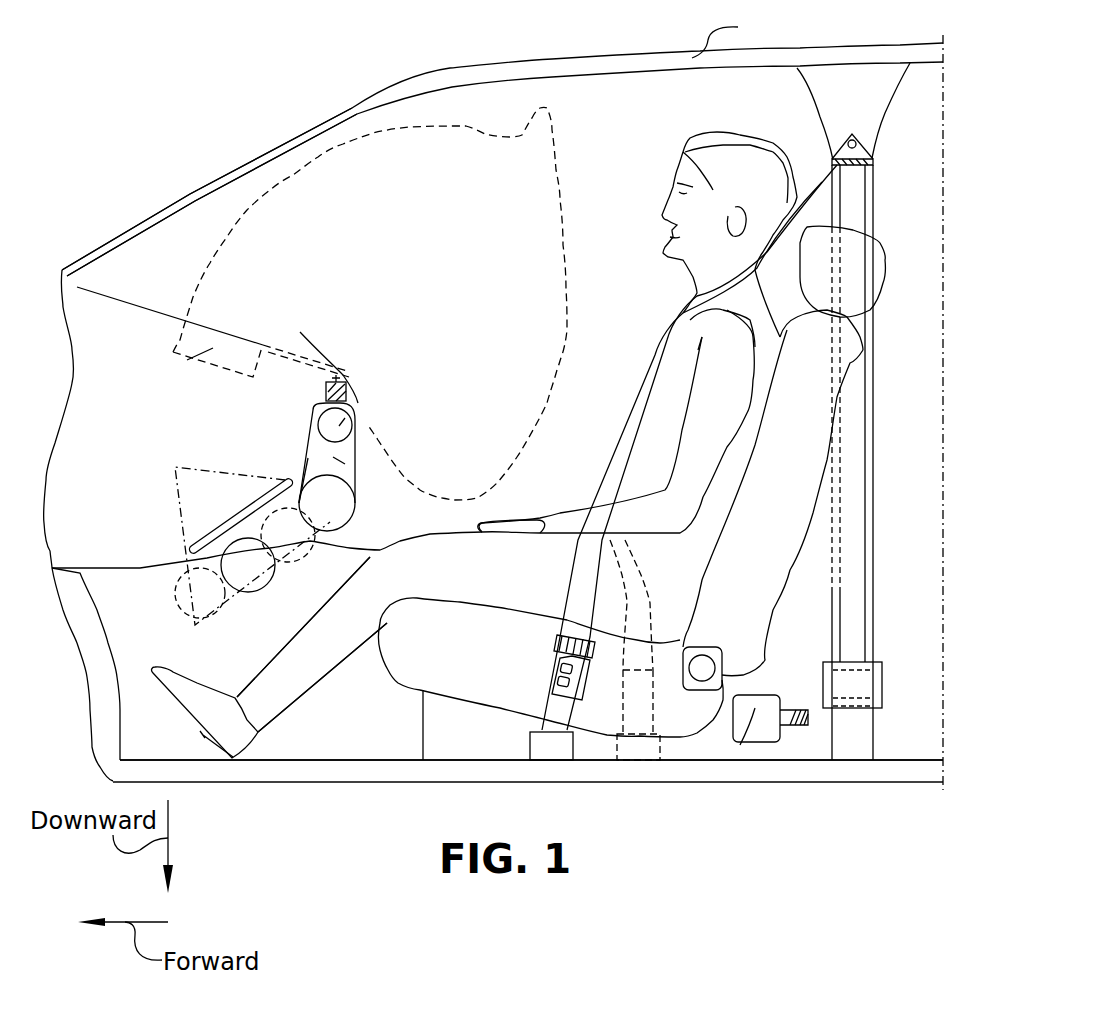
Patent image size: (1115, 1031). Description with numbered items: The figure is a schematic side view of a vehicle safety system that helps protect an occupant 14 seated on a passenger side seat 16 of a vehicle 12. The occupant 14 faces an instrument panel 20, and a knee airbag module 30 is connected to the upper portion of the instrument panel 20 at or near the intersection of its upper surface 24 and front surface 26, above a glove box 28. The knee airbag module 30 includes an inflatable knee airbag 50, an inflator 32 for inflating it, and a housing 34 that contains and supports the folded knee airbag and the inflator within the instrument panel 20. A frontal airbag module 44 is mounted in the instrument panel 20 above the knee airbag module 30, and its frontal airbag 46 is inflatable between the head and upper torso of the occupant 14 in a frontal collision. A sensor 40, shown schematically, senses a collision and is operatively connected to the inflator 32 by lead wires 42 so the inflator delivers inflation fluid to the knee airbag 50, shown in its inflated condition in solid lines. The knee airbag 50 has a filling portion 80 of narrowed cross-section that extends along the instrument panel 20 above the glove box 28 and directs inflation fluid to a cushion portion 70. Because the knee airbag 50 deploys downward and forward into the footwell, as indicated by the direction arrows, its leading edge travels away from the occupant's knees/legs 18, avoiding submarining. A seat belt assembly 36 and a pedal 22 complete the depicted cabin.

The vehicle 12 is at (179, 148).
The occupant 14 is at (677, 377).
The passenger side seat 16 is at (512, 663).
The knees/legs 18 is at (400, 570).
The instrument panel 20 is at (143, 337).
The pedal 22 is at (256, 638).
The upper surface 24 is at (130, 302).
The front surface 26 is at (365, 424).
The glove box 28 is at (127, 490).
The knee airbag module 30 is at (277, 314).
The inflator 32 is at (360, 416).
The housing 34 is at (309, 460).
The seat belt assembly 36 is at (720, 411).
The sensor 40 is at (753, 715).
The lead wires 42 is at (358, 410).
The frontal airbag module 44 is at (180, 353).
The frontal airbag 46 is at (540, 108).
The knee airbag 50 is at (300, 500).
The cushion portion 70 is at (370, 557).
The filling portion 80 is at (337, 458).